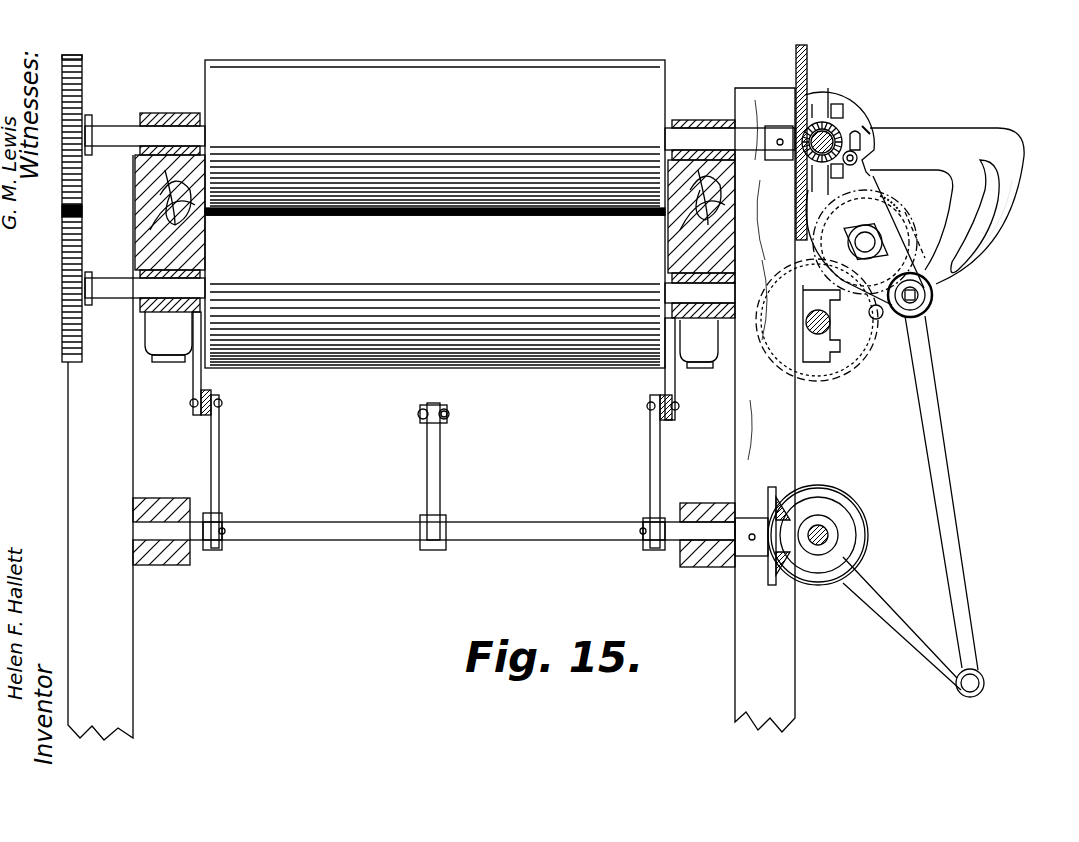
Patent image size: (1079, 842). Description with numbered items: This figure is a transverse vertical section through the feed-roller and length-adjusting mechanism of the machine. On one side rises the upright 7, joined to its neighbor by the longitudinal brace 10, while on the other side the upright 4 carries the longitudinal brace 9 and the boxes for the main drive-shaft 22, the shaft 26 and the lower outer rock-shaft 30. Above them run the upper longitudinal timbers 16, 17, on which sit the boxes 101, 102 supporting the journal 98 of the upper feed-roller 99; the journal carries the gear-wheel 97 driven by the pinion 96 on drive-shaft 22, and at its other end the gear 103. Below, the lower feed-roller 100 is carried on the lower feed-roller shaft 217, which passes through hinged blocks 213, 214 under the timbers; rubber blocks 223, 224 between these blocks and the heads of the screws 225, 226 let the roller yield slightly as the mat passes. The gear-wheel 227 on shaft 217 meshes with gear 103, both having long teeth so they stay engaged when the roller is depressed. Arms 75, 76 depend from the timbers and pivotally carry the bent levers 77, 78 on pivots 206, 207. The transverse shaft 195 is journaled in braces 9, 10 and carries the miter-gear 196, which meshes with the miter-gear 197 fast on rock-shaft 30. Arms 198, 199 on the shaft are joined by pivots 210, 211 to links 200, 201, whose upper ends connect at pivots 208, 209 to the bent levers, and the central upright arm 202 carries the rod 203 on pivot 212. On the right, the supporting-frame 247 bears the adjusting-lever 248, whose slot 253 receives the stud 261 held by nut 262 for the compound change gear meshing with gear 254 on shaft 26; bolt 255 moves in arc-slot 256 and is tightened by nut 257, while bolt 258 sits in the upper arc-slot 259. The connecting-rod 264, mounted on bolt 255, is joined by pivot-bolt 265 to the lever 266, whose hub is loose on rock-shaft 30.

The upright 4 is at (765, 410).
The upright 7 is at (100, 447).
The longitudinal brace 9 is at (702, 568).
The longitudinal brace 10 is at (176, 566).
The upper longitudinal timber 16 is at (735, 210).
The upper longitudinal timber 17 is at (136, 225).
The main drive-shaft 22 is at (847, 122).
The shaft 26 is at (831, 322).
The lower outer longitudinal rock-shaft 30 is at (830, 536).
The arm 75 is at (665, 382).
The arm 76 is at (204, 379).
The bent lever 77 is at (668, 421).
The bent lever 78 is at (205, 418).
The pinion 96 is at (824, 122).
The gear-wheel 97 is at (700, 140).
The journal 98 is at (105, 127).
The upper feed-roller 99 is at (435, 137).
The lower feed-roller 100 is at (435, 291).
The box 101 is at (697, 112).
The box 102 is at (166, 114).
The gear 103 is at (82, 74).
The transverse shaft 195 is at (358, 542).
The miter-gear 196 is at (772, 490).
The miter-gear 197 is at (830, 507).
The arm 198 is at (643, 524).
The arm 199 is at (222, 522).
The link 200 is at (650, 480).
The link 201 is at (216, 480).
The upright arm 202 is at (440, 475).
The rod 203 is at (420, 411).
The pivot 206 is at (676, 407).
The pivot 207 is at (190, 404).
The pivot 208 is at (648, 407).
The pivot 209 is at (222, 404).
The pivot 210 is at (640, 548).
The pivot 211 is at (226, 545).
The pivot 212 is at (448, 418).
The hinged block 213 is at (734, 340).
The hinged block 214 is at (140, 321).
The lower feed-roller shaft 217 is at (108, 299).
The rubber block 223 is at (699, 341).
The rubber block 224 is at (168, 333).
The screw 225 is at (700, 369).
The screw 226 is at (158, 363).
The gear-wheel 227 is at (62, 338).
The supporting-frame 247 is at (947, 206).
The adjusting-lever 248 is at (865, 240).
The slot 253 is at (890, 202).
The gear 254 is at (845, 376).
The bolt 255 is at (946, 282).
The arc-slot 256 is at (976, 240).
The nut 257 is at (933, 296).
The bolt 258 is at (868, 150).
The upper arc-slot 259 is at (872, 140).
The stud 261 is at (876, 242).
The nut 262 is at (926, 224).
The connecting-rod 264 is at (948, 576).
The pivot-bolt 265 is at (966, 688).
The lever 266 is at (858, 158).